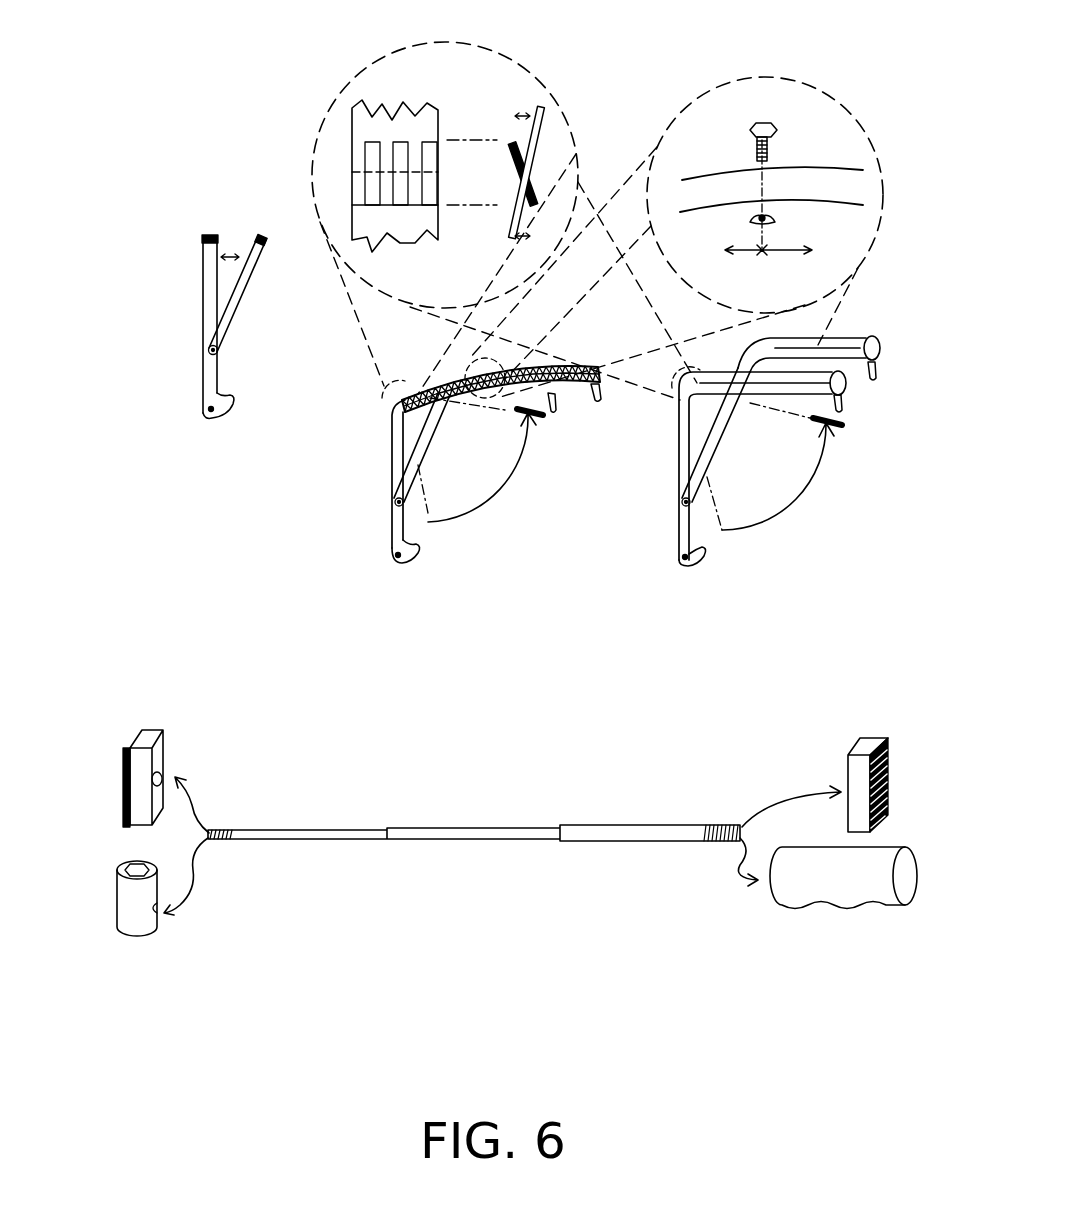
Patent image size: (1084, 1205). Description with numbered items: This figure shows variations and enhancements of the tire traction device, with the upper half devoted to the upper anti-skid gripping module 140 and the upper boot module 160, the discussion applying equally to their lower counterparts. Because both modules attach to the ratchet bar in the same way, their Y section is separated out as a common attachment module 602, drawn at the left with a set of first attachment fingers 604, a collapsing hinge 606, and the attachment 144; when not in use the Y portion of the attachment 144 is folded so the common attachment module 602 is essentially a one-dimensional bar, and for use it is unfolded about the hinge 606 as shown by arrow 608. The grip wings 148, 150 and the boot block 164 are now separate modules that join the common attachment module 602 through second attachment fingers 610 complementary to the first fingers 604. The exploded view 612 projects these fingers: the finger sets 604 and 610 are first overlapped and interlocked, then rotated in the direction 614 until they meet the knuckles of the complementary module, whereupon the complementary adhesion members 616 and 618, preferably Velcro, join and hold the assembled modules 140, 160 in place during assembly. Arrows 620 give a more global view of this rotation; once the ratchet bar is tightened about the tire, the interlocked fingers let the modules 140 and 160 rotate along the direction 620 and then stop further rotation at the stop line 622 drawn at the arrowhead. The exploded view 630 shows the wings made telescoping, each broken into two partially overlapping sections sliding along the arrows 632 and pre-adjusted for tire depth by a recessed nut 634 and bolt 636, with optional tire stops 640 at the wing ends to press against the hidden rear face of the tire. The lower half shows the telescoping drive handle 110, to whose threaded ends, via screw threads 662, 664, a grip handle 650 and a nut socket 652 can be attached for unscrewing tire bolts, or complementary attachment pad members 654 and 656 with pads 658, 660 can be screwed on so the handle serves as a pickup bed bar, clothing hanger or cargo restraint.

The telescoping drive handle 110 is at (438, 829).
The upper anti-skid gripping module 140 is at (500, 521).
The attachment 144 is at (234, 392).
The grip wing 148 is at (578, 368).
The grip wing 150 is at (543, 367).
The upper boot module 160 is at (800, 520).
The boot block 164 is at (828, 340).
The common attachment module 602 is at (166, 317).
The first attachment fingers 604 is at (263, 238).
The collapsing hinge 606 is at (218, 348).
The unfolding arrow 608 is at (230, 254).
The second attachment fingers 610 is at (484, 206).
The exploded view 612 is at (362, 80).
The rotation direction 614 is at (531, 112).
The adhesion member 616 is at (533, 142).
The adhesion member 618 is at (534, 205).
The rotation arrows 620 is at (513, 473).
The stop line 622 is at (531, 414).
The exploded view 630 is at (778, 84).
The telescoping arrows 632 is at (762, 254).
The nut 634 is at (776, 222).
The bolt 636 is at (772, 126).
The tire stops 640 is at (557, 412).
The grip handle 650 is at (837, 877).
The nut socket 652 is at (133, 920).
The attachment pad member 654 is at (140, 768).
The attachment pad member 656 is at (860, 770).
The pad 658 is at (121, 772).
The pad 660 is at (887, 780).
The screw threads 662 is at (717, 827).
The screw threads 664 is at (225, 829).